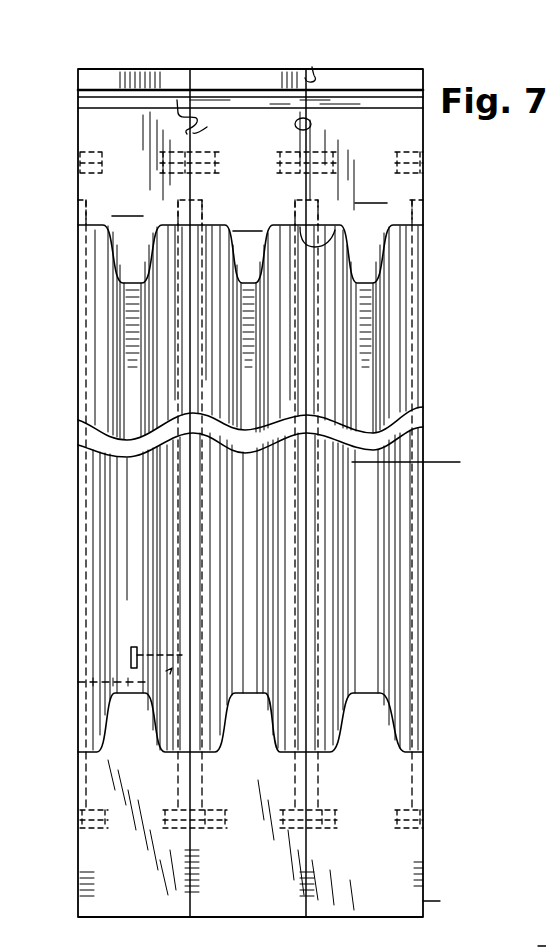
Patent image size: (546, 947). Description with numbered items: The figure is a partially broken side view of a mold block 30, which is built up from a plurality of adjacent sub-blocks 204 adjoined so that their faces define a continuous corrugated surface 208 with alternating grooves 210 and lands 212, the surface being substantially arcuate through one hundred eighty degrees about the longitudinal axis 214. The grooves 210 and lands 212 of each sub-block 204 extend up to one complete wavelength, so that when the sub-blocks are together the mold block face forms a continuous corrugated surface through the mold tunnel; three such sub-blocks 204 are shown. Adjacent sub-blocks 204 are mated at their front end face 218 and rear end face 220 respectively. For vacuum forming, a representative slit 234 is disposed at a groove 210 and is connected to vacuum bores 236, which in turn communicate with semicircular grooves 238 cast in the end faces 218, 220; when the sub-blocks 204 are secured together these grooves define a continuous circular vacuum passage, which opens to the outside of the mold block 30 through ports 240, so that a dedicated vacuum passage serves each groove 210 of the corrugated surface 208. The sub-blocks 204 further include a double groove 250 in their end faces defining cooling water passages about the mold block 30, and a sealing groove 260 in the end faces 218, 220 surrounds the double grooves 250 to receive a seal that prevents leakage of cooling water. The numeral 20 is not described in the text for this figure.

The mold block 30 is at (201, 68).
The heat exchanger 20 is at (512, 940).
The sub-block 204 is at (249, 205).
The corrugated surface 208 is at (395, 314).
The groove 210 is at (310, 243).
The land 212 is at (250, 326).
The longitudinal axis 214 is at (443, 462).
The front end face 218 is at (207, 127).
The rear end face 220 is at (177, 100).
The slit 234 is at (130, 656).
The vacuum bore 236 is at (80, 684).
The semicircular groove 238 is at (197, 196).
The port 240 is at (78, 862).
The double groove 250 is at (158, 172).
The sealing groove 260 is at (434, 924).